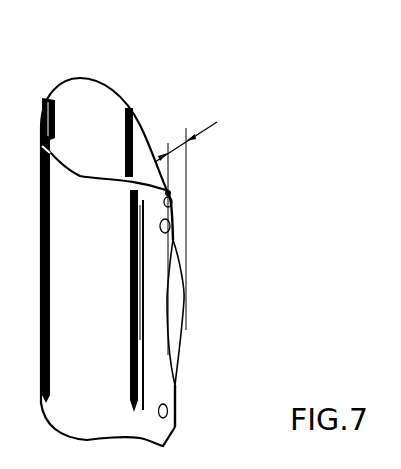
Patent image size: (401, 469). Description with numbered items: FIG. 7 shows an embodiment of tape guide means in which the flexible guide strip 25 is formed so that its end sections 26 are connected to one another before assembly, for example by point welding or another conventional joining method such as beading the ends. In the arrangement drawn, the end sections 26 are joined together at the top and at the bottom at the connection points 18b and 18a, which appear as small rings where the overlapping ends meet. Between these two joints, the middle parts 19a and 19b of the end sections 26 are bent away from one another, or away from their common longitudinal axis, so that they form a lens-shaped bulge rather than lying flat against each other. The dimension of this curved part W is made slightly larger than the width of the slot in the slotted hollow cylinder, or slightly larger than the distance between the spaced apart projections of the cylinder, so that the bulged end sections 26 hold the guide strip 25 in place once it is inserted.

The flexible guide strip 25 is at (68, 74).
The end section 26 is at (177, 206).
The connection point 18a is at (176, 421).
The connection point 18b is at (178, 234).
The middle part 19a is at (187, 318).
The middle part 19b is at (170, 328).
The curved part W is at (186, 228).